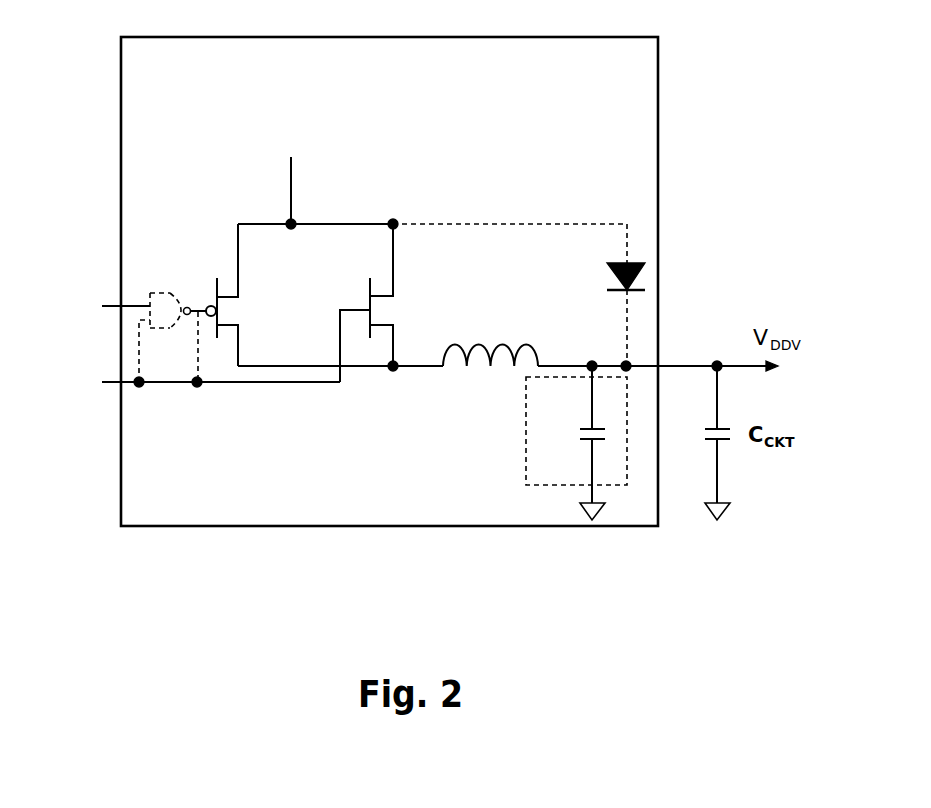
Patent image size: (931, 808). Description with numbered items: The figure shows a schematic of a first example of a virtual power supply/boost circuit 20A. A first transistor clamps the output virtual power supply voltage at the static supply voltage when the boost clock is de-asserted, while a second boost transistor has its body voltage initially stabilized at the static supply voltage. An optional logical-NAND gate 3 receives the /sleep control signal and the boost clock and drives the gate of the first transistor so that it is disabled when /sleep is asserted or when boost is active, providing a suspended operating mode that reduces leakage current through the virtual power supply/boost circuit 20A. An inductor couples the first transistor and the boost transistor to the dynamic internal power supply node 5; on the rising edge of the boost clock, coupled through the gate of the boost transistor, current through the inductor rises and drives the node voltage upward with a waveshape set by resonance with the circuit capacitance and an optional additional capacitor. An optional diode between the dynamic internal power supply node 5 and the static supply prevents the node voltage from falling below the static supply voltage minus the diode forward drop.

The virtual power supply/boost circuit 20A is at (528, 74).
The logical-NAND gate 3 is at (168, 291).
The dynamic internal power supply node 5 is at (683, 364).